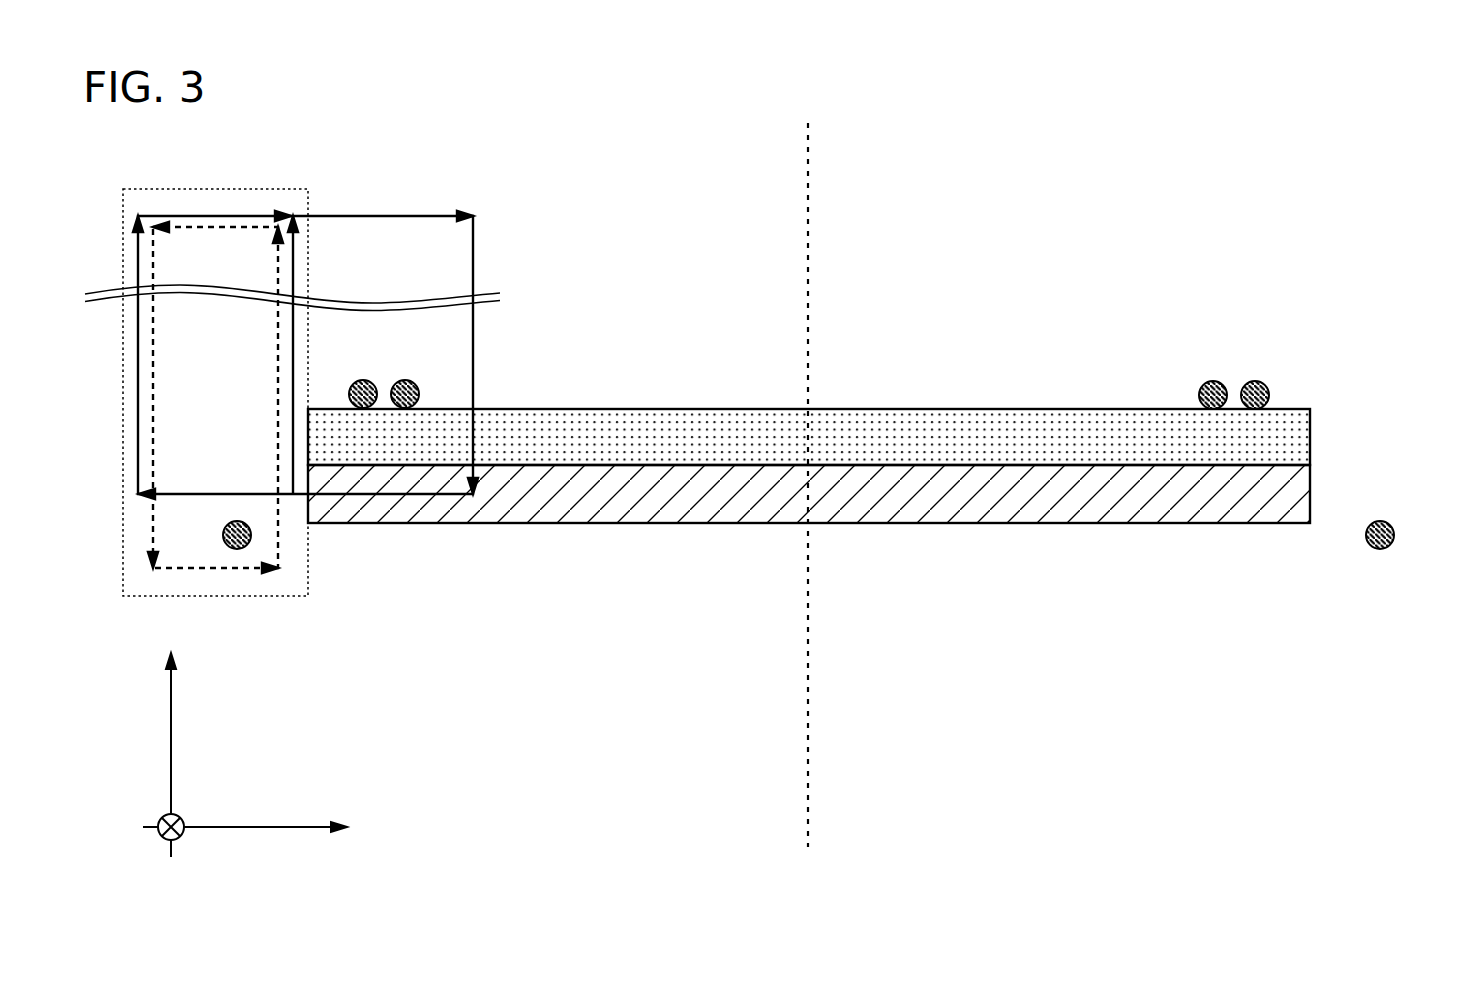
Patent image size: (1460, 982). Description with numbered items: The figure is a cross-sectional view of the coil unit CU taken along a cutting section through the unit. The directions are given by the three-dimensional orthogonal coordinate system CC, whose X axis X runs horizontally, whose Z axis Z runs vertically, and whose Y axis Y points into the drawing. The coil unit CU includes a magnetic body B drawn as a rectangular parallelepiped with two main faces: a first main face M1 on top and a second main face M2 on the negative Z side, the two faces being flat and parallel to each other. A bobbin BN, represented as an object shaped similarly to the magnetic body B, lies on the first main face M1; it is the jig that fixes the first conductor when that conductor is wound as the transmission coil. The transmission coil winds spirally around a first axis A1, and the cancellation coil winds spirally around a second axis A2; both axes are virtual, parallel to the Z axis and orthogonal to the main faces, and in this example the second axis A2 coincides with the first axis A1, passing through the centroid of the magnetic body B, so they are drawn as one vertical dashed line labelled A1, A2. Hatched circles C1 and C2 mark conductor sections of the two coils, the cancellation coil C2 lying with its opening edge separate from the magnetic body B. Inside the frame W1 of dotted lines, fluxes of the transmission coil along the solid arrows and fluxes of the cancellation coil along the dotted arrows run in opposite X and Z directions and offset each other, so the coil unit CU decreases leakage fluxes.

The frame of dotted lines W1 is at (252, 185).
The first contaminant C1 is at (388, 368).
The second contaminant C2 is at (258, 537).
The coil unit CU is at (809, 482).
The bobbin BN is at (887, 409).
The first main face M1 is at (809, 402).
The second main face M2 is at (809, 551).
The magnetic body B is at (915, 523).
The first axis A1 is at (874, 485).
The second axis A2 is at (808, 275).
The three-dimensional orthogonal coordinate system CC is at (254, 746).
The X axis X is at (276, 829).
The Y axis Y is at (155, 846).
The Z axis Z is at (173, 720).